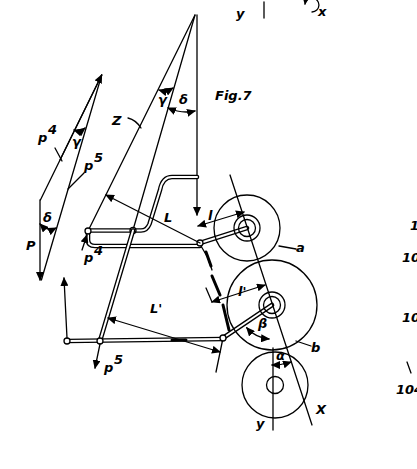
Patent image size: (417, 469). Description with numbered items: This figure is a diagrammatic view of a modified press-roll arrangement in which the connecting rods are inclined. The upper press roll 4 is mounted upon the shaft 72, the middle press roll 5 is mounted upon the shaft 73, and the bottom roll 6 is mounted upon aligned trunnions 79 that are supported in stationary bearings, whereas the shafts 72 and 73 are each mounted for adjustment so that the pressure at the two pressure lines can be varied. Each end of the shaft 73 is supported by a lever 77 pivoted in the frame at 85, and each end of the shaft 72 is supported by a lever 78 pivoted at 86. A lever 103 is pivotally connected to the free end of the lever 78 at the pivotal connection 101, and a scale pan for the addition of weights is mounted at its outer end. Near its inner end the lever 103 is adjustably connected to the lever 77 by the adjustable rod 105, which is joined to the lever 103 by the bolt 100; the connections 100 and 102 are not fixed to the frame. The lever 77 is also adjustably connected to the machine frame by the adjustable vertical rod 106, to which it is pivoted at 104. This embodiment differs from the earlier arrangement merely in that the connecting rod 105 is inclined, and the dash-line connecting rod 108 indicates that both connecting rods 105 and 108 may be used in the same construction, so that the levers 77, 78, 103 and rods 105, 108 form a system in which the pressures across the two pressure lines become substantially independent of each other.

The upper press roll 4 is at (262, 209).
The middle press roll 5 is at (301, 287).
The bottom roll 6 is at (251, 381).
The shaft 72 is at (250, 228).
The shaft 73 is at (274, 305).
The lever 77 is at (148, 344).
The lever 78 is at (185, 250).
The trunnion 79 is at (270, 388).
The pivot 85 is at (220, 336).
The pivot 86 is at (199, 248).
The bolt 100 is at (98, 336).
The pivotal connection 101 is at (94, 228).
The connection 102 is at (133, 236).
The lever 103 is at (181, 176).
The pivot 104 is at (61, 353).
The adjustable vertical rod 105 is at (118, 288).
The adjustable vertical rod 106 is at (70, 302).
The connecting rod 108 is at (208, 288).